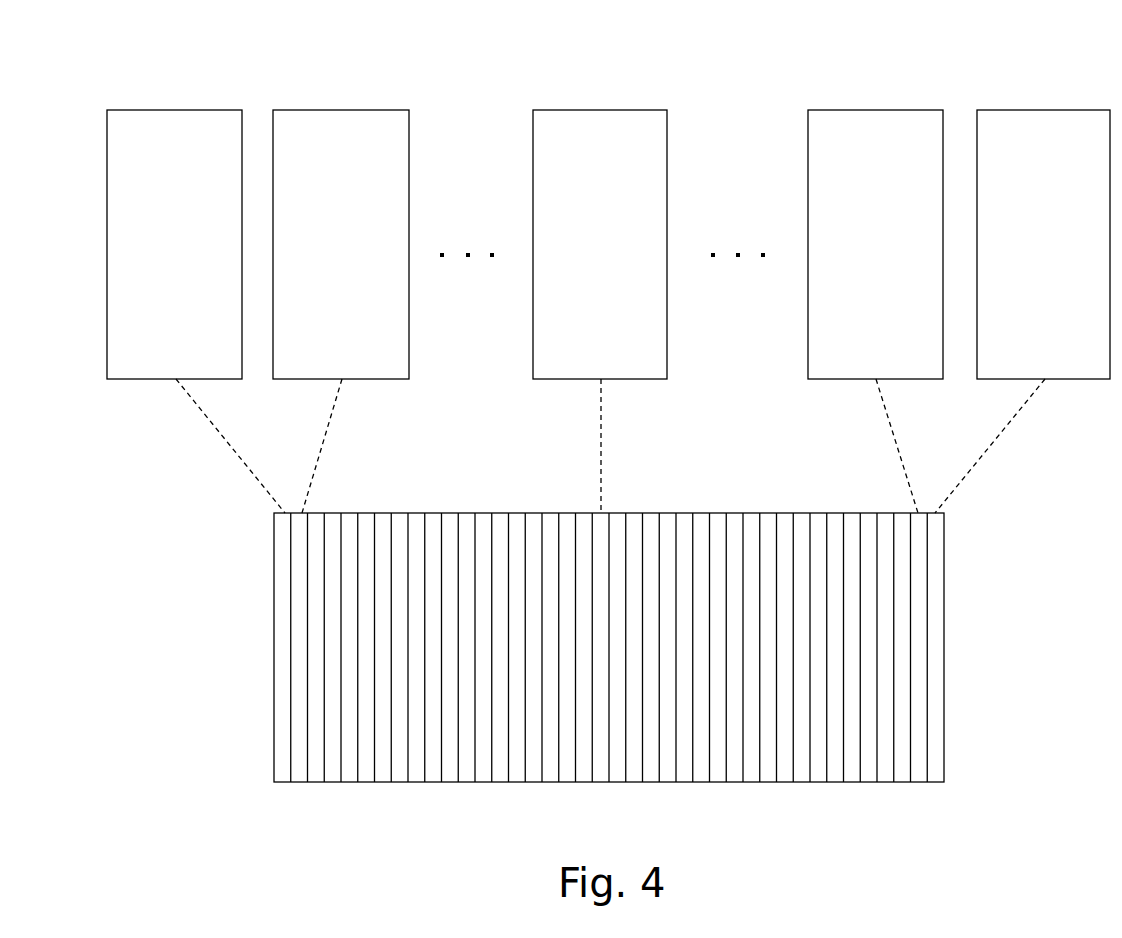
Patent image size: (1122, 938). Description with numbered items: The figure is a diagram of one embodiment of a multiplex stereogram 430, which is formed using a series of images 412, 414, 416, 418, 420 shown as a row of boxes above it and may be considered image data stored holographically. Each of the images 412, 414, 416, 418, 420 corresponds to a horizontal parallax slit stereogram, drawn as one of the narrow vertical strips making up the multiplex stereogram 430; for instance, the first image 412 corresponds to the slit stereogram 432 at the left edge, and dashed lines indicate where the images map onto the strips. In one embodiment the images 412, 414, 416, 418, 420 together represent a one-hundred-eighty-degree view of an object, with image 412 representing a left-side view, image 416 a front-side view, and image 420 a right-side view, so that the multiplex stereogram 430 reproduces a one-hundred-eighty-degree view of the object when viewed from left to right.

The image 412 is at (172, 110).
The image 414 is at (338, 110).
The image 416 is at (598, 110).
The image 418 is at (875, 110).
The image 420 is at (1042, 110).
The multiplex stereogram 430 is at (944, 640).
The slit stereogram 432 is at (283, 782).